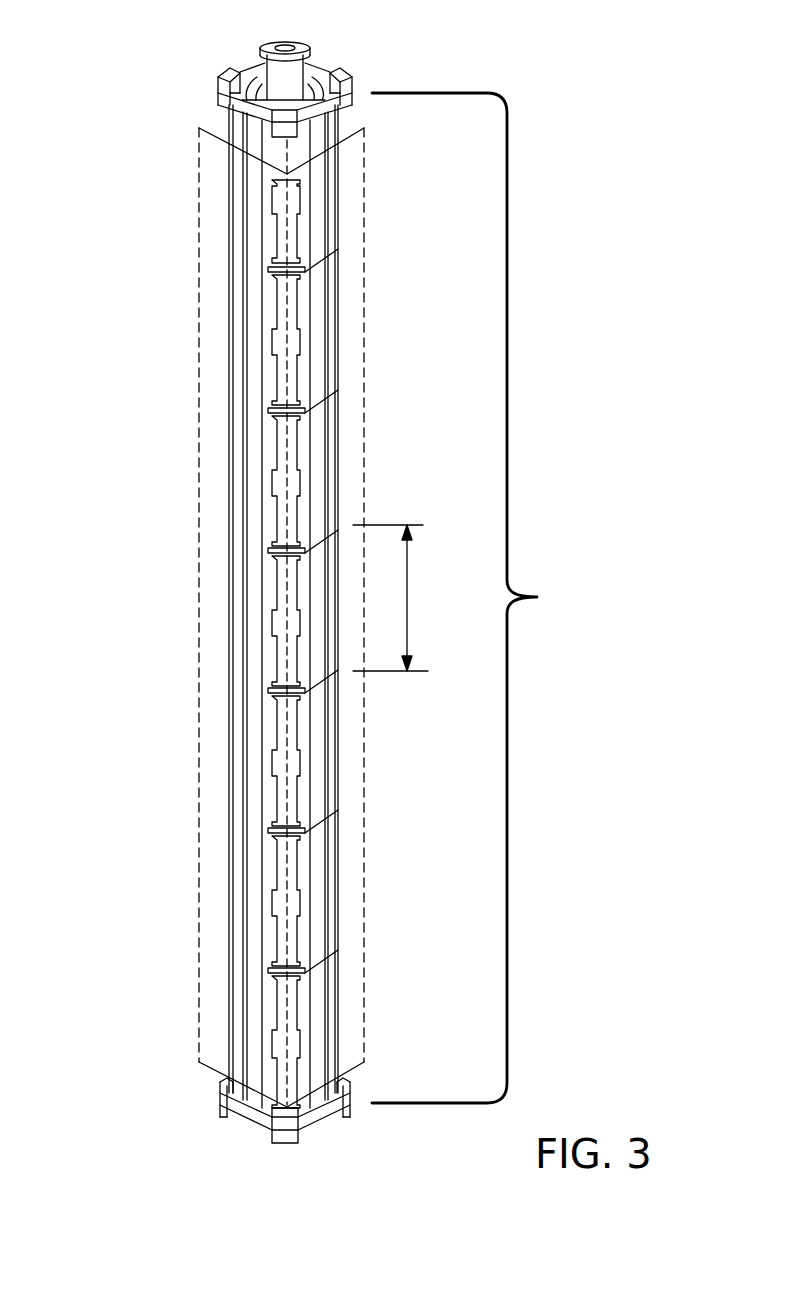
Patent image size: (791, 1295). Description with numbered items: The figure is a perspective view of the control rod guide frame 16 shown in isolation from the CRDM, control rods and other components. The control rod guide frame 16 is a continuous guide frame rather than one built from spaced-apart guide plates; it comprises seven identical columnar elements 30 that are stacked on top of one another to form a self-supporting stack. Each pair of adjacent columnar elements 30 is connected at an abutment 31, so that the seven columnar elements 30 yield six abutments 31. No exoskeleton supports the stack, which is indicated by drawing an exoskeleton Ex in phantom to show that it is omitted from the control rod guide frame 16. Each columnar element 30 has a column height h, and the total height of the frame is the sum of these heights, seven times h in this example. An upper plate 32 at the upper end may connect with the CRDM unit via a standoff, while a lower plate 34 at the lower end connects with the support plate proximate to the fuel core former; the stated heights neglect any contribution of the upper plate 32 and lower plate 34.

The control rod guide frame 16 is at (520, 294).
The columnar element 30 is at (229, 182).
The abutment 31 is at (268, 268).
The upper plate 32 is at (262, 66).
The lower plate 34 is at (248, 1109).
The exoskeleton Ex is at (199, 838).
The column height h is at (407, 607).